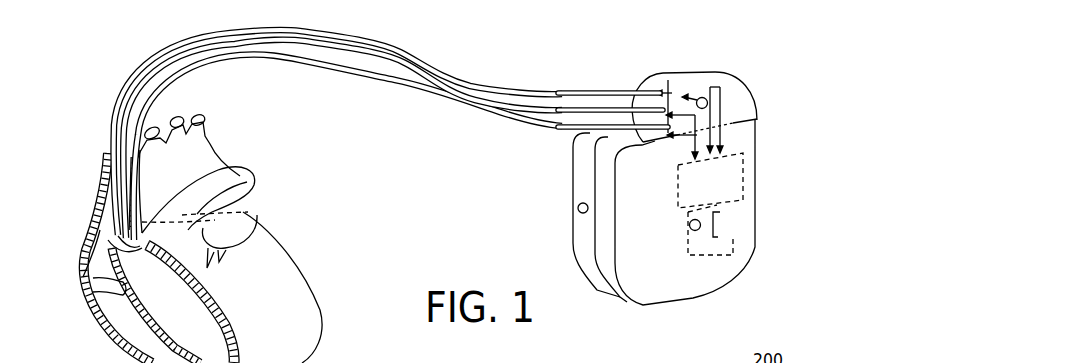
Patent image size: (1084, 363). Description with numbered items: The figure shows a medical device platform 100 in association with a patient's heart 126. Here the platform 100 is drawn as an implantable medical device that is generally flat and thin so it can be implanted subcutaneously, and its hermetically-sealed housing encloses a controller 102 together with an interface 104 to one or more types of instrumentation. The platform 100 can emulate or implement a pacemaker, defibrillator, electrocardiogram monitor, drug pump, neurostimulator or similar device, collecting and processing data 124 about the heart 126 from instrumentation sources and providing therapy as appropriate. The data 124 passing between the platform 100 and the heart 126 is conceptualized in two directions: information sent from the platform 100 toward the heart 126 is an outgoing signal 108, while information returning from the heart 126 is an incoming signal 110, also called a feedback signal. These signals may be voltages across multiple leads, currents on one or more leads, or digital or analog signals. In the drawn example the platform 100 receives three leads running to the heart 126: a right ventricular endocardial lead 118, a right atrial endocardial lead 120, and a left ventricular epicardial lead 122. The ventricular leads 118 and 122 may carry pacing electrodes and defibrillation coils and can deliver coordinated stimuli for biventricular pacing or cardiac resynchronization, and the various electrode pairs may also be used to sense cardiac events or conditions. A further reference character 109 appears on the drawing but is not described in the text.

The medical device platform 100 is at (689, 152).
The controller 102 is at (720, 245).
The interface 104 is at (728, 188).
The outgoing signal 108 is at (720, 73).
The lead connector port 109 is at (724, 104).
The incoming signal 110 is at (701, 80).
The right ventricular endocardial lead 118 is at (334, 73).
The right atrial endocardial lead 120 is at (305, 27).
The left ventricular epicardial lead 122 is at (470, 77).
The data 124 is at (728, 125).
The heart 126 is at (280, 295).